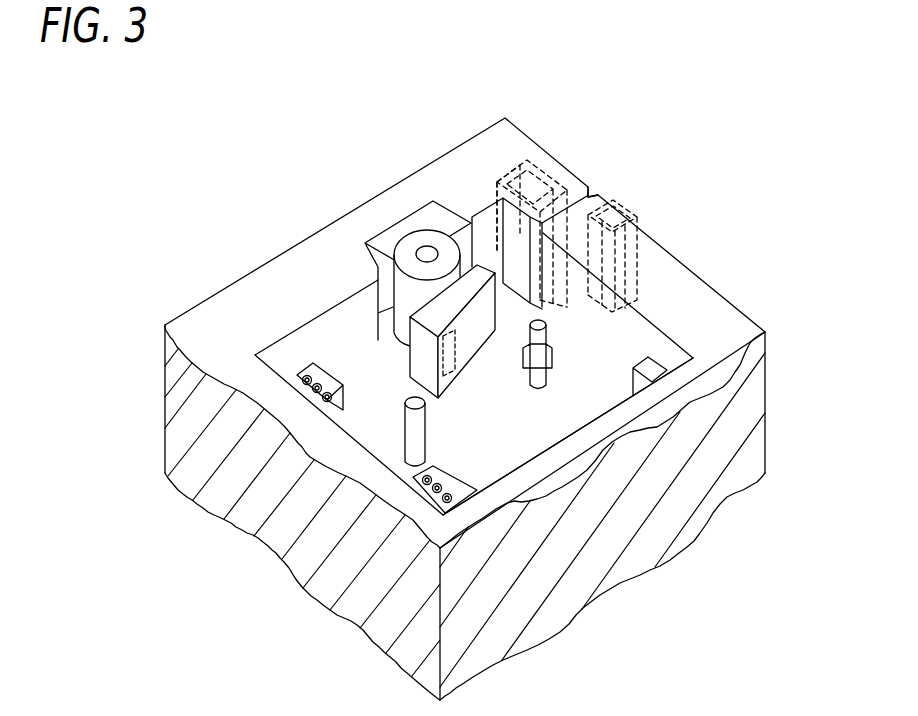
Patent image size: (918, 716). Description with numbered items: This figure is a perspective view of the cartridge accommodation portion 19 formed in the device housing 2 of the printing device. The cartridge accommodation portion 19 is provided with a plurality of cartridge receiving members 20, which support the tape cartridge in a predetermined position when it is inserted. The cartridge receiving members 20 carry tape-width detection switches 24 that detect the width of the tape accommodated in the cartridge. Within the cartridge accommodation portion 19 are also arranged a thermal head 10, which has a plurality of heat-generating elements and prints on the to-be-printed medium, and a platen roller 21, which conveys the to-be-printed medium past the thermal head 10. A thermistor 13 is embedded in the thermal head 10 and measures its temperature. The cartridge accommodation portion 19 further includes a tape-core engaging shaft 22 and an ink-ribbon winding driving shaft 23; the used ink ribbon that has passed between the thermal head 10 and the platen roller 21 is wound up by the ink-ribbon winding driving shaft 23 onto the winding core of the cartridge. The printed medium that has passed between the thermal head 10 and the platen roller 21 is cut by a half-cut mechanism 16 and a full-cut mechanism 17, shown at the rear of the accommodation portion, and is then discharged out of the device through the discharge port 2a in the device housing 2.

The device housing 2 is at (208, 296).
The discharge port 2a is at (599, 185).
The thermal head 10 is at (473, 352).
The thermistor 13 is at (463, 342).
The half-cut mechanism 16 is at (520, 150).
The full-cut mechanism 17 is at (494, 162).
The cartridge accommodation portion 19 is at (540, 420).
The cartridge receiving member 20 is at (322, 362).
The platen roller 21 is at (413, 243).
The tape-core engaging shaft 22 is at (426, 421).
The ink-ribbon winding driving shaft 23 is at (551, 363).
The tape-width detection switch 24 is at (347, 383).